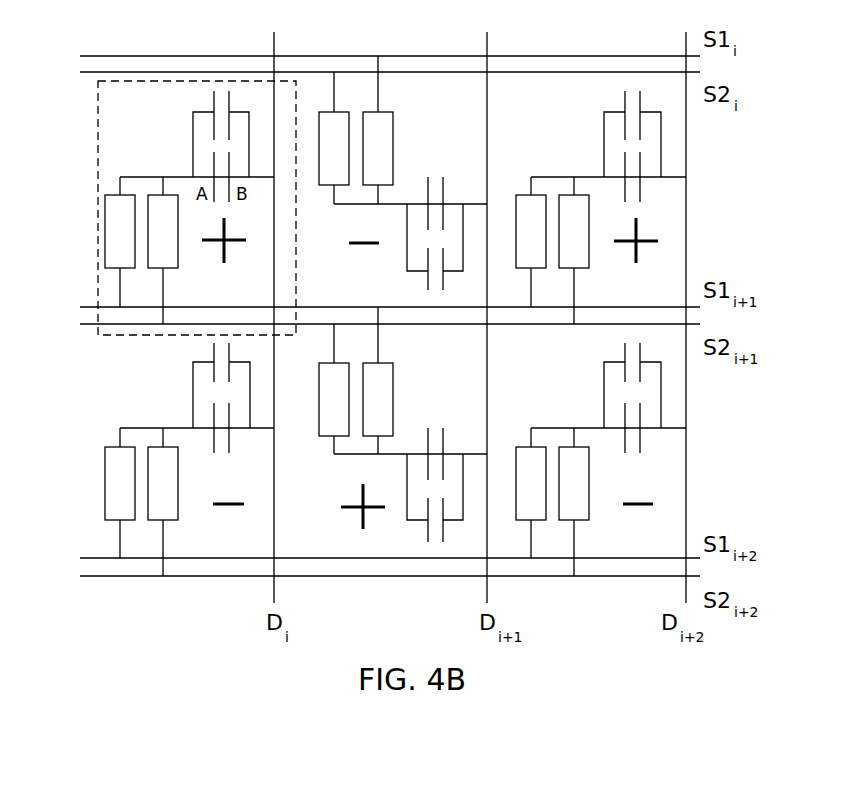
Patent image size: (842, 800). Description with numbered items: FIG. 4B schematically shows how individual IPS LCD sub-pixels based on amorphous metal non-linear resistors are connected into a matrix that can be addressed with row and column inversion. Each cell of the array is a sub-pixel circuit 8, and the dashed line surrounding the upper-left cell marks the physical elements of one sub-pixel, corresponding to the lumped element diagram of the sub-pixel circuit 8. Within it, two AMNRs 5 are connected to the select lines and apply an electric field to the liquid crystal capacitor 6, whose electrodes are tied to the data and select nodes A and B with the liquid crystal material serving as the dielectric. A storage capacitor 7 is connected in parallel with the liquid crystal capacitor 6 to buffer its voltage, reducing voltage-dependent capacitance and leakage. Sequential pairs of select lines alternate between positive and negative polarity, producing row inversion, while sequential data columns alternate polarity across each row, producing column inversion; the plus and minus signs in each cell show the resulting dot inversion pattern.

The amorphous metal non-linear resistor 5 is at (102, 218).
The liquid crystal capacitor 6 is at (211, 165).
The storage capacitor 7 is at (211, 101).
The sub-pixel circuit 8 is at (96, 136).